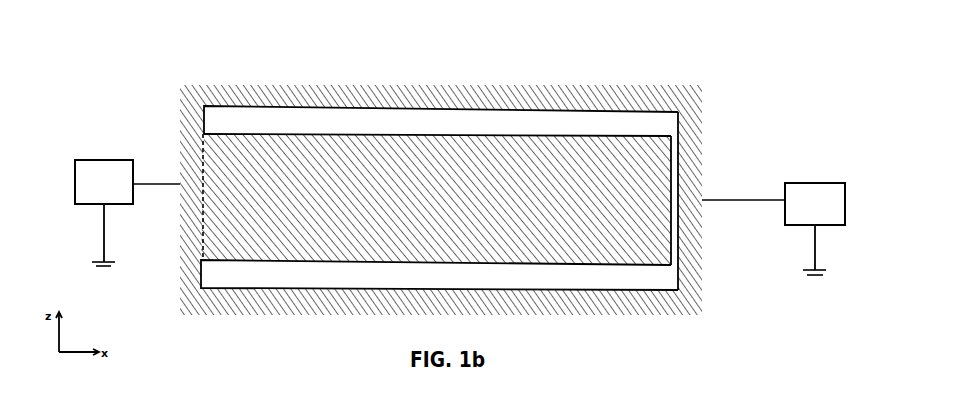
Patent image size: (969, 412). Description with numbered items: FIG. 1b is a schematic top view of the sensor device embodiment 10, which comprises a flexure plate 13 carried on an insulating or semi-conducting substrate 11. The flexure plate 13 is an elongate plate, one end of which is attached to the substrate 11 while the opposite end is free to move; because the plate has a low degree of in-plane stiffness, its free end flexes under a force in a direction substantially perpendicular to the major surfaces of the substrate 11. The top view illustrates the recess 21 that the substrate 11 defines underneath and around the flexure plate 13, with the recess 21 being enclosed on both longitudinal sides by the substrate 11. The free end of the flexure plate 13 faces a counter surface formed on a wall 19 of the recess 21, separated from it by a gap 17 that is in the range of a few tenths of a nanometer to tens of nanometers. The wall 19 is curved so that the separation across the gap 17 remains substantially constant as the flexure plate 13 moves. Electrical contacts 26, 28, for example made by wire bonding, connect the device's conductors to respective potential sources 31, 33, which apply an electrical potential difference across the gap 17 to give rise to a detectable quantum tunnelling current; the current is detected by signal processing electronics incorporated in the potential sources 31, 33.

The embodiment 10 is at (442, 200).
The substrate 11 is at (567, 320).
The flexure plate 13 is at (225, 220).
The gap 17 is at (667, 137).
The wall 19 is at (688, 145).
The recess 21 is at (312, 278).
The electrical contact 26 is at (160, 180).
The electrical contact 28 is at (740, 200).
The potential source 31 is at (90, 160).
The potential source 33 is at (833, 183).